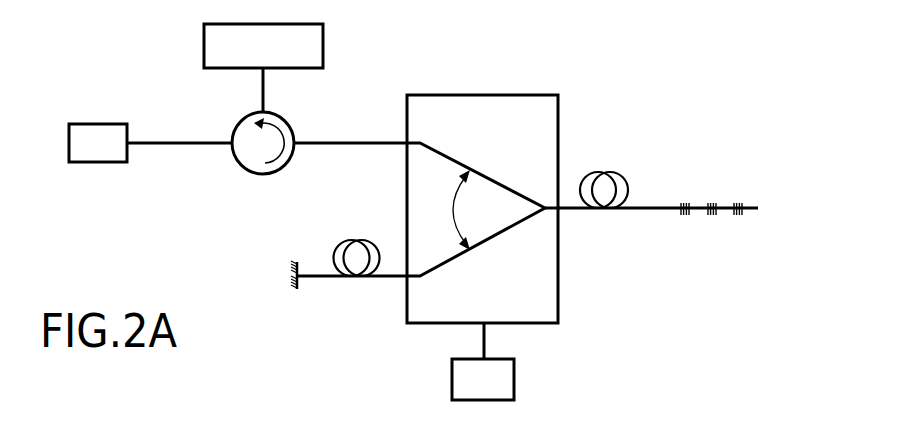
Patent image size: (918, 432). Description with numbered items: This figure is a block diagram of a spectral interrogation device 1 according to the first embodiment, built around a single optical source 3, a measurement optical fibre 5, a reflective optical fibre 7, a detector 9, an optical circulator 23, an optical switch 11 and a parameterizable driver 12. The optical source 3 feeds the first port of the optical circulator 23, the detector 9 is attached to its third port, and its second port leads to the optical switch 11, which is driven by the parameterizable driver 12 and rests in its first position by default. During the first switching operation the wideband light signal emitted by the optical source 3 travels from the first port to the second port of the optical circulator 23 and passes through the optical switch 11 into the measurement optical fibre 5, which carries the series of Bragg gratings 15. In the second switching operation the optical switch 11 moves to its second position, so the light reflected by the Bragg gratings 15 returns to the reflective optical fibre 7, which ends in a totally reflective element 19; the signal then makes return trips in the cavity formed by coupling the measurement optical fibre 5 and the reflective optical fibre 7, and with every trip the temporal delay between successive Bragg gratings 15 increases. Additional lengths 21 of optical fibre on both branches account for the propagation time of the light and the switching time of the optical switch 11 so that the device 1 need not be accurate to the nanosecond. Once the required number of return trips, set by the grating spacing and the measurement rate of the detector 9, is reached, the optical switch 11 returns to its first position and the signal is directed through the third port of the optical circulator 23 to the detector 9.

The spectral interrogation device 1 is at (593, 89).
The optical source 3 is at (92, 128).
The measurement optical fibre 5 is at (607, 238).
The reflective optical fibre 7 is at (334, 290).
The detector 9 is at (318, 48).
The optical switch 11 is at (536, 104).
The parameterizable driver 12 is at (507, 380).
The Bragg gratings 15 is at (685, 217).
The totally reflective element 19 is at (293, 272).
The additional lengths of optical fibre 21 is at (360, 245).
The optical circulator 23 is at (240, 167).